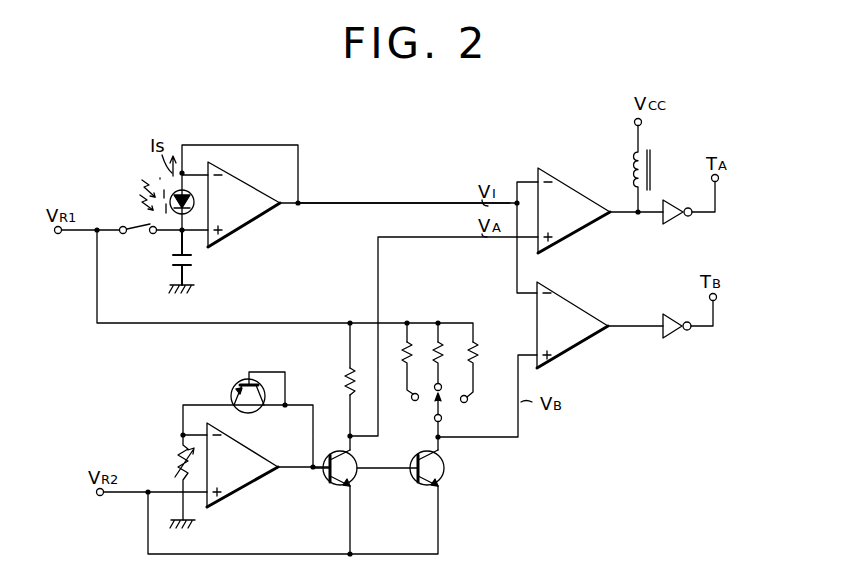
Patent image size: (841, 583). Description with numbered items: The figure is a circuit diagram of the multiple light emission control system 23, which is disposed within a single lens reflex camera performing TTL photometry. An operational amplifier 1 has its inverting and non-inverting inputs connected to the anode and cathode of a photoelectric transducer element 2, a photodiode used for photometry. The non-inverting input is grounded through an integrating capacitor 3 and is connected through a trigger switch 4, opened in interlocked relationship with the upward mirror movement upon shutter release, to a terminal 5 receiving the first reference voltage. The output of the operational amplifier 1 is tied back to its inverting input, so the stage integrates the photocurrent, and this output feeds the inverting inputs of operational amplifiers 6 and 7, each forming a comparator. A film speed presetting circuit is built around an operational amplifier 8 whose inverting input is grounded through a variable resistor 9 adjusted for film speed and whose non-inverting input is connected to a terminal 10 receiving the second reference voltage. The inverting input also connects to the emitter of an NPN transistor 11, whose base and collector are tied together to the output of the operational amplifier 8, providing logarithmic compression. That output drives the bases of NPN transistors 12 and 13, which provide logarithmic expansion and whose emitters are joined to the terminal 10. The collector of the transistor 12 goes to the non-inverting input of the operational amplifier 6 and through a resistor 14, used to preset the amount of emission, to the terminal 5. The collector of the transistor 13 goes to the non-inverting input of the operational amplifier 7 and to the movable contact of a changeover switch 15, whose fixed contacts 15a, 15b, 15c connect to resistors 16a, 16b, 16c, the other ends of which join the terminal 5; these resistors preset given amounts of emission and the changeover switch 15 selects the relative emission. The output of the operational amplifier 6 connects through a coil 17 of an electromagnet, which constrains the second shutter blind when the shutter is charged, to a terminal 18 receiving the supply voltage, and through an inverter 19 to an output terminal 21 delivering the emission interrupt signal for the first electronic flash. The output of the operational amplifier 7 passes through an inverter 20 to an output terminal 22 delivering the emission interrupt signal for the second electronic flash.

The operational amplifier 1 is at (248, 192).
The photoelectric transducer element 2 is at (194, 202).
The integrating capacitor 3 is at (172, 262).
The trigger switch 4 is at (136, 225).
The terminal 5 is at (60, 245).
The operational amplifier 6 is at (576, 198).
The operational amplifier 7 is at (572, 308).
The operational amplifier 8 is at (246, 450).
The variable resistor 9 is at (177, 461).
The terminal 10 is at (100, 496).
The NPN transistor 11 is at (235, 393).
The NPN transistor 12 is at (350, 483).
The NPN transistor 13 is at (438, 466).
The resistor 14 is at (348, 372).
The changeover switch 15 is at (458, 409).
The fixed contact 15a is at (468, 398).
The fixed contact 15b is at (442, 387).
The fixed contact 15c is at (401, 409).
The resistor 16a is at (474, 345).
The resistor 16b is at (447, 340).
The resistor 16c is at (406, 340).
The coil 17 is at (653, 153).
The terminal 18 is at (634, 122).
The inverter 19 is at (671, 205).
The inverter 20 is at (662, 322).
The output terminal 21 is at (718, 181).
The output terminal 22 is at (716, 300).
The multiple light emission control system 23 is at (424, 177).